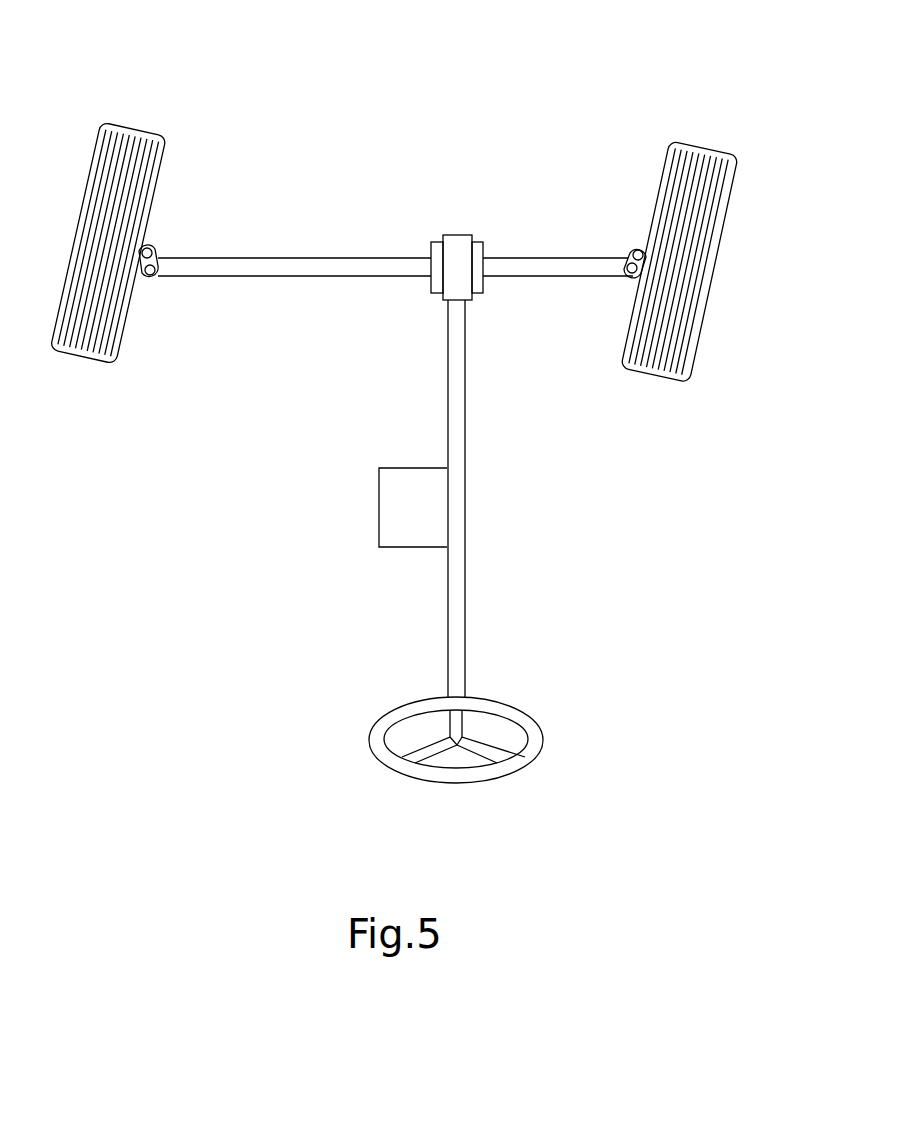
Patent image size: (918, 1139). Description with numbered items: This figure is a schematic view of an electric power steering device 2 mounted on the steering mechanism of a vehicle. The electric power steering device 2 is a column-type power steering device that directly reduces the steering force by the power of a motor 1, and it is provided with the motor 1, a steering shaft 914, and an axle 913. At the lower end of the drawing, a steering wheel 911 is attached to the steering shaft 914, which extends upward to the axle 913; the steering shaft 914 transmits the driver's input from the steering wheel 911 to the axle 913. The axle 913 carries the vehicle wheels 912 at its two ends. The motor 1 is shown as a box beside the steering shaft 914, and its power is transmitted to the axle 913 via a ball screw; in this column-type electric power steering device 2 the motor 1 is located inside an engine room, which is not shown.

The motor 1 is at (369, 512).
The electric power steering device 2 is at (596, 121).
The steering wheel 911 is at (447, 773).
The vehicle wheels 912 is at (80, 345).
The axle 913 is at (515, 266).
The steering shaft 914 is at (455, 623).